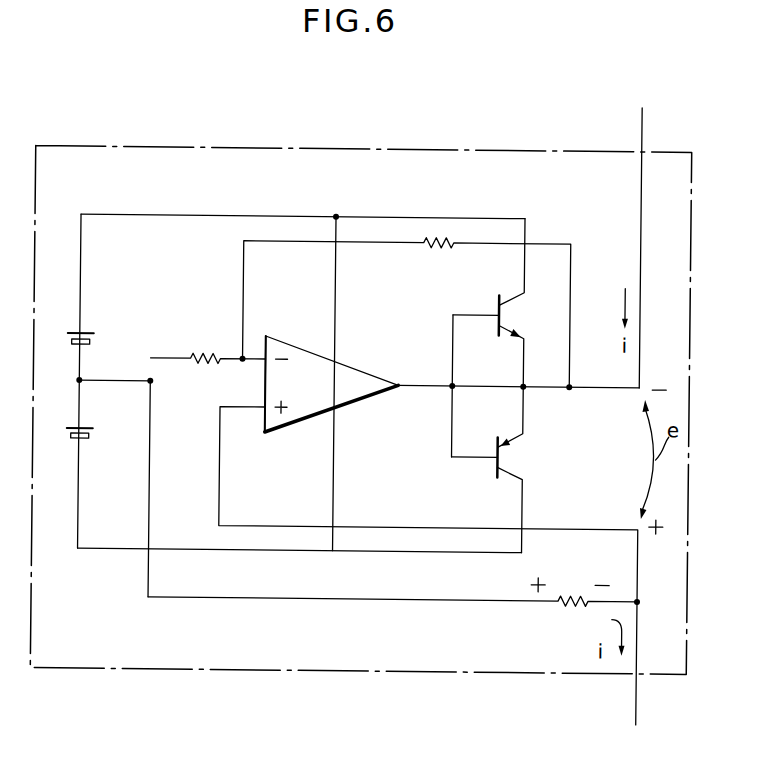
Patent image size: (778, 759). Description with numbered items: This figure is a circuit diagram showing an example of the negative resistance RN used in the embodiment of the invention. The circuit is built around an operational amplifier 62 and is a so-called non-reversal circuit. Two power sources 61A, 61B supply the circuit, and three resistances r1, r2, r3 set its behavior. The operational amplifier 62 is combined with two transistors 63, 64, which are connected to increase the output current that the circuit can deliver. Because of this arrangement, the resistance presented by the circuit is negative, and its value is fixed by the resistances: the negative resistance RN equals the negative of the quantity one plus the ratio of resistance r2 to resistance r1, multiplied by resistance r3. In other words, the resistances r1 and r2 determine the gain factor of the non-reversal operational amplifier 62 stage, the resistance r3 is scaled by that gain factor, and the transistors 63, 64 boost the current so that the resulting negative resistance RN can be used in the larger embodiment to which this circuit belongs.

The negative resistance RN is at (143, 161).
The power source 61A is at (92, 331).
The power source 61B is at (91, 438).
The operational amplifier 62 is at (357, 367).
The transistor 63 is at (511, 314).
The transistor 64 is at (517, 456).
The resistance r1 is at (207, 346).
The resistance r2 is at (406, 311).
The resistance r3 is at (393, 605).